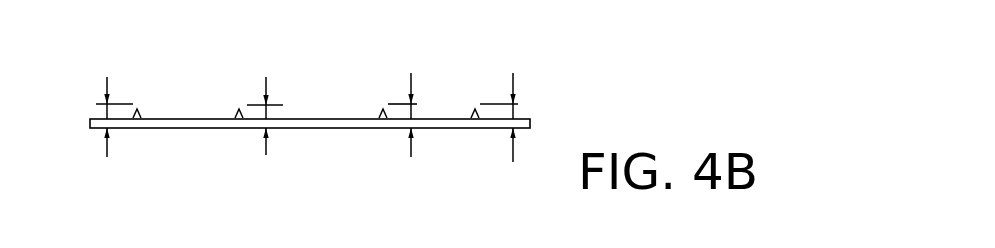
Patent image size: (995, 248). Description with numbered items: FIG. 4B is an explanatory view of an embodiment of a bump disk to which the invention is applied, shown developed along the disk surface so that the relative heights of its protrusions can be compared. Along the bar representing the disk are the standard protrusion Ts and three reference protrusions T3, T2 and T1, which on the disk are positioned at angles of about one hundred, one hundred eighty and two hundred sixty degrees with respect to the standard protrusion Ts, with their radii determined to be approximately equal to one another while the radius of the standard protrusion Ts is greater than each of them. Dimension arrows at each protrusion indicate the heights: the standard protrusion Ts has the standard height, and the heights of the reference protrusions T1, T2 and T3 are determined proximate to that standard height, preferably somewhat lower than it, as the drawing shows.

The reference protrusion T3 is at (117, 116).
The reference protrusion T2 is at (257, 115).
The standard protrusion Ts is at (394, 115).
The reference protrusion T1 is at (499, 117).